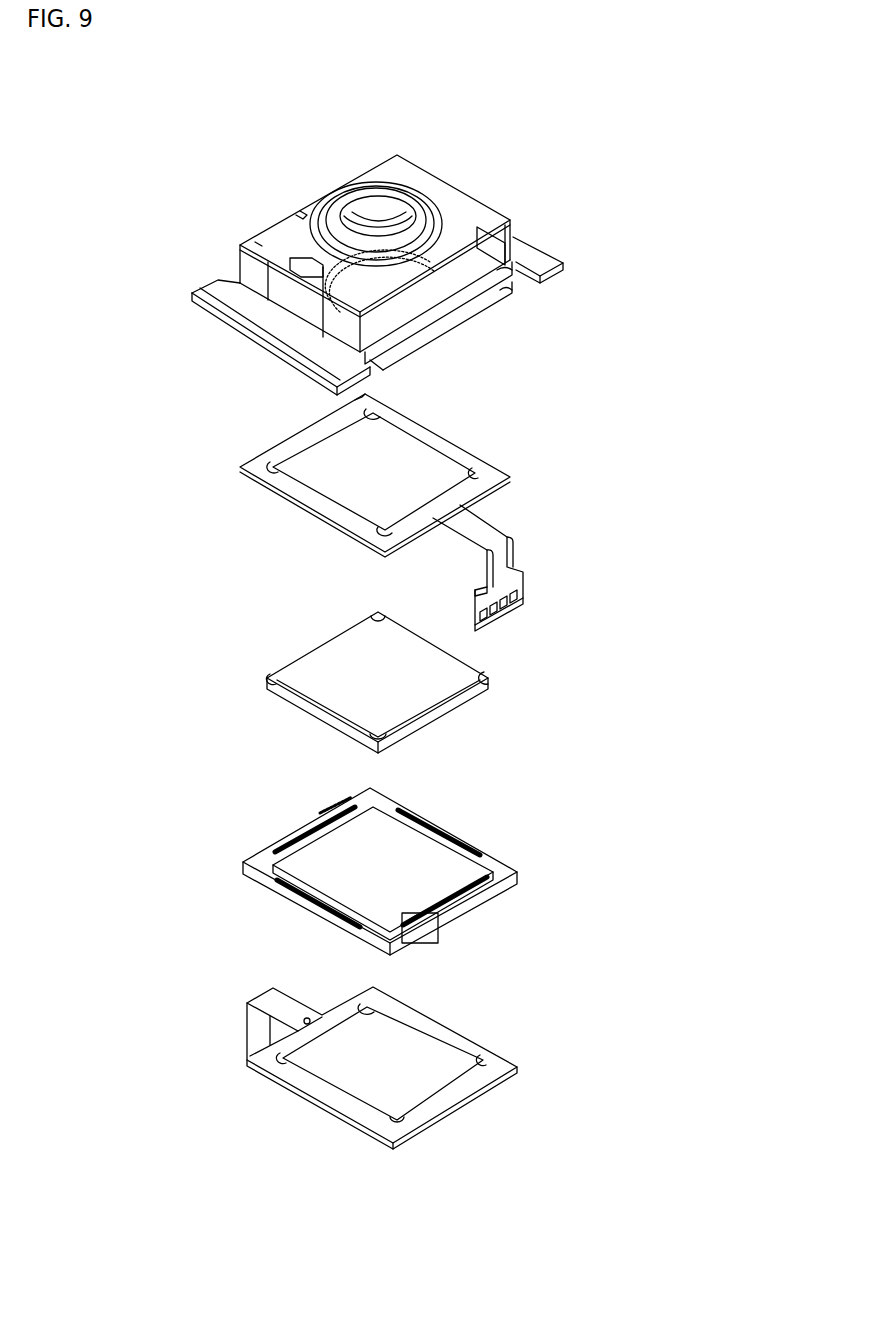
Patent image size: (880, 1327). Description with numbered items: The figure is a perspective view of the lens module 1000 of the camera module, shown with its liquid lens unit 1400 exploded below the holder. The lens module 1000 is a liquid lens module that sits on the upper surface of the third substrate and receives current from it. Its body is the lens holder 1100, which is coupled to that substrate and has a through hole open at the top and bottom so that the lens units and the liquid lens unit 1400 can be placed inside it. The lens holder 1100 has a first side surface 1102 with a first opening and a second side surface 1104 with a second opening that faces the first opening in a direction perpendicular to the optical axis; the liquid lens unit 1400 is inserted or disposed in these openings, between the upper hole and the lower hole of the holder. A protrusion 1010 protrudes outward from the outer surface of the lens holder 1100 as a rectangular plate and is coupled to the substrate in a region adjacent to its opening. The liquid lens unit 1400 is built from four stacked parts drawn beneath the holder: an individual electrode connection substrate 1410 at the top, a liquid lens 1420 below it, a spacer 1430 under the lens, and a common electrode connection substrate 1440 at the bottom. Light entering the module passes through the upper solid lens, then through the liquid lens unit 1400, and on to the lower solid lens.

The lens module 1000 is at (232, 88).
The lens holder 1100 is at (478, 192).
The first side surface 1102 is at (255, 242).
The second side surface 1104 is at (510, 245).
The protrusion 1010 is at (255, 325).
The liquid lens unit 1400 is at (659, 502).
The individual electrode connection substrate 1410 is at (490, 483).
The liquid lens 1420 is at (488, 678).
The spacer 1430 is at (520, 870).
The common electrode connection substrate 1440 is at (512, 1060).